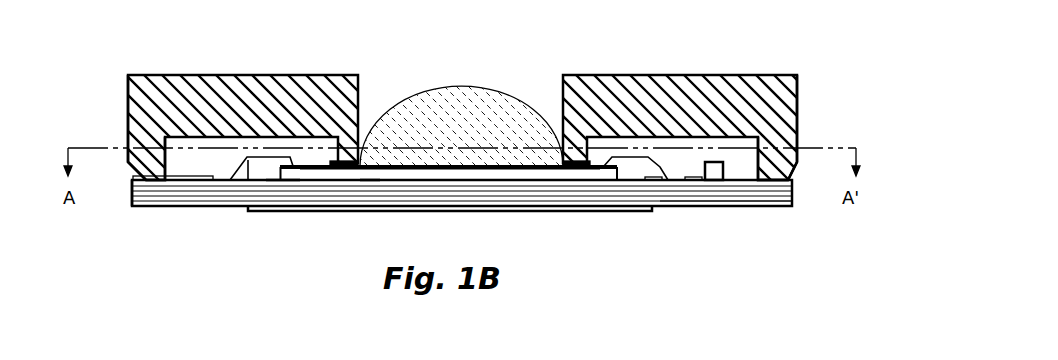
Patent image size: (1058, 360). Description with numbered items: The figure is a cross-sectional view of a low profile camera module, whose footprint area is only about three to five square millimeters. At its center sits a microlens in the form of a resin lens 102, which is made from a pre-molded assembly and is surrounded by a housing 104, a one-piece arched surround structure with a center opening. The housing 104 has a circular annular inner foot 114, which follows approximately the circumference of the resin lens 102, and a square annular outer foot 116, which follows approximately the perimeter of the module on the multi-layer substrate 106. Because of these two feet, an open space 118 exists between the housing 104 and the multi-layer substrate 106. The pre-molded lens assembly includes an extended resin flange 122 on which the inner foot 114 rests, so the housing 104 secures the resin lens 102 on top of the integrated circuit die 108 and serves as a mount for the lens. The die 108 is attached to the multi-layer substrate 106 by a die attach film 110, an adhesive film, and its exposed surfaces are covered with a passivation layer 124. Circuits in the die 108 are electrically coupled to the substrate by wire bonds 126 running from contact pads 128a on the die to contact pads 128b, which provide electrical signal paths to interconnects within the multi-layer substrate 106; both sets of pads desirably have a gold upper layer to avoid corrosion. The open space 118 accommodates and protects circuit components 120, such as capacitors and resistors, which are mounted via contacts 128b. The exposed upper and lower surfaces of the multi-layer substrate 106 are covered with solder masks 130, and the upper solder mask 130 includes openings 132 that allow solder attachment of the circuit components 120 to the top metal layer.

The resin lens 102 is at (497, 93).
The housing 104 is at (800, 103).
The multi-layer substrate 106 is at (793, 190).
The integrated circuit die 108 is at (513, 169).
The die attach film 110 is at (473, 178).
The circular annular inner foot 114 is at (338, 163).
The square annular outer foot 116 is at (148, 158).
The open space 118 is at (735, 163).
The circuit components 120 is at (712, 172).
The extended resin flange 122 is at (323, 177).
The passivation layer 124 is at (313, 176).
The wire bonds 126 is at (250, 160).
The contact pads 128a is at (278, 178).
The contact pads 128b is at (212, 181).
The solder masks 130 is at (133, 193).
The openings 132 is at (650, 175).